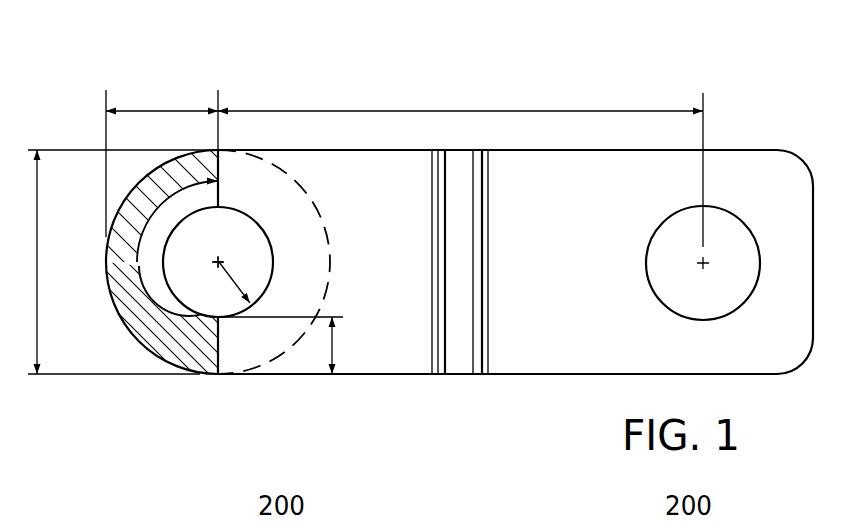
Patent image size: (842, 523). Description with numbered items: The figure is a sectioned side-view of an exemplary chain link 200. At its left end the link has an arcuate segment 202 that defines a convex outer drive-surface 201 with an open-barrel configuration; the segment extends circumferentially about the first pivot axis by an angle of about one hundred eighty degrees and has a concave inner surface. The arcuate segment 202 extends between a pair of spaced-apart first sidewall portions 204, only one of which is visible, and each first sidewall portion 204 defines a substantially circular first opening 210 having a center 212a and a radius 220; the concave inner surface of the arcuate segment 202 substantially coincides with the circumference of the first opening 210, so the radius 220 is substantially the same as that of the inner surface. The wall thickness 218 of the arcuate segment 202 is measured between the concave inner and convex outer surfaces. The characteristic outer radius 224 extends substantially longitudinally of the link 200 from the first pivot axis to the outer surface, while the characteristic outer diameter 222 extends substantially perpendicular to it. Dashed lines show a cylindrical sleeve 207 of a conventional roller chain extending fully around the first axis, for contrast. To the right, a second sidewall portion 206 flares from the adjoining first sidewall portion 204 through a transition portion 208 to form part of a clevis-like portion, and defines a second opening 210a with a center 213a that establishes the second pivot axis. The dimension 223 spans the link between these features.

The chain link 200 is at (762, 102).
The drive-surface 201 is at (112, 302).
The arcuate segment 202 is at (216, 343).
The first sidewall portion 204 is at (407, 265).
The second sidewall portion 206 is at (735, 167).
The cylindrical sleeve 207 is at (335, 237).
The transition portion 208 is at (457, 205).
The first opening 210 is at (273, 264).
The second opening 210a is at (648, 264).
The center of first opening 212a is at (219, 262).
The center of second opening 213a is at (703, 264).
The wall thickness 218 is at (333, 349).
The radius of first opening 220 is at (234, 282).
The characteristic outer diameter 222 is at (38, 214).
The body length 223 is at (465, 110).
The characteristic outer radius 224 is at (182, 111).